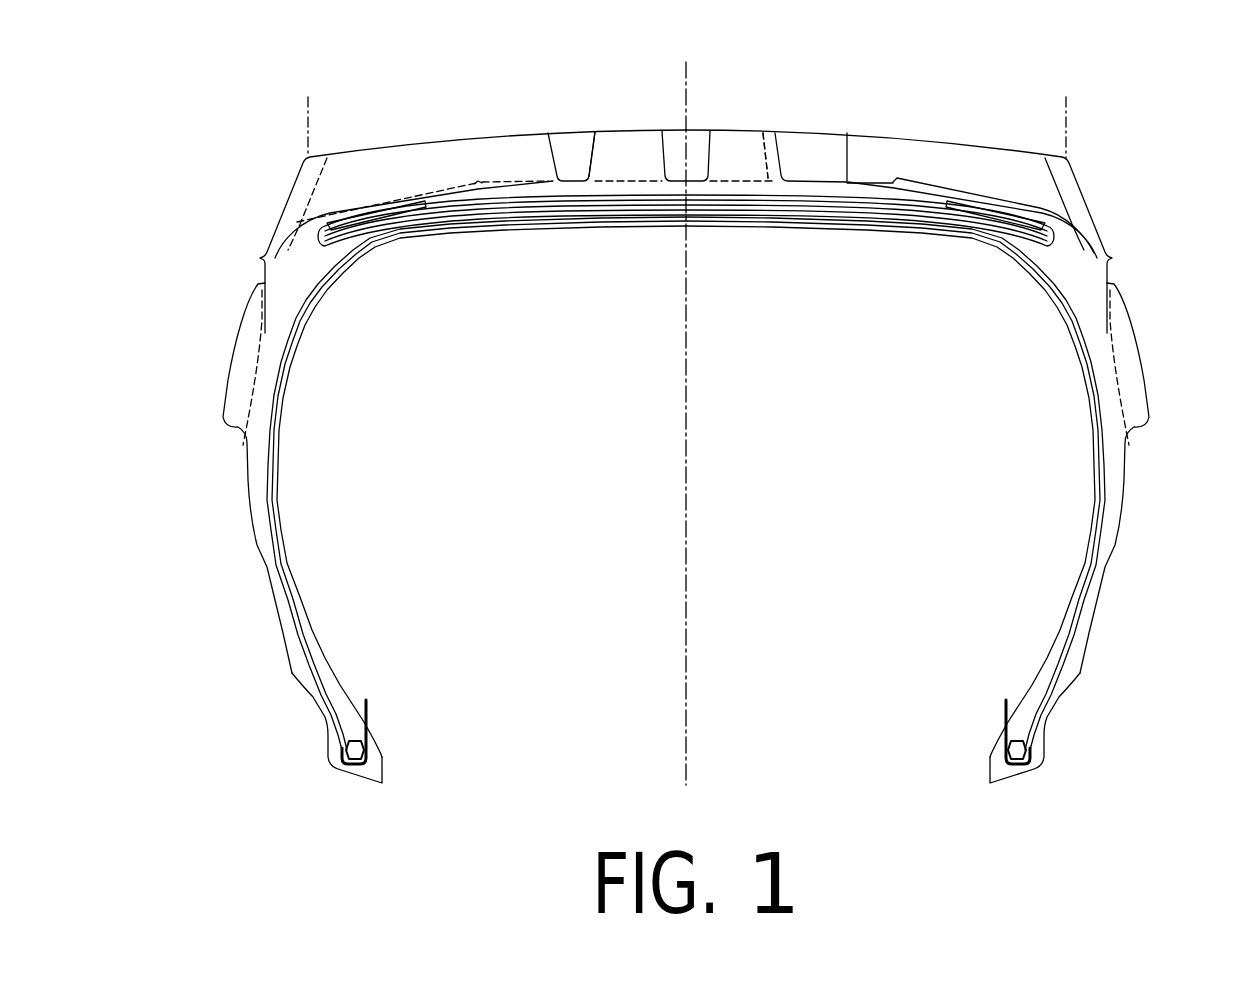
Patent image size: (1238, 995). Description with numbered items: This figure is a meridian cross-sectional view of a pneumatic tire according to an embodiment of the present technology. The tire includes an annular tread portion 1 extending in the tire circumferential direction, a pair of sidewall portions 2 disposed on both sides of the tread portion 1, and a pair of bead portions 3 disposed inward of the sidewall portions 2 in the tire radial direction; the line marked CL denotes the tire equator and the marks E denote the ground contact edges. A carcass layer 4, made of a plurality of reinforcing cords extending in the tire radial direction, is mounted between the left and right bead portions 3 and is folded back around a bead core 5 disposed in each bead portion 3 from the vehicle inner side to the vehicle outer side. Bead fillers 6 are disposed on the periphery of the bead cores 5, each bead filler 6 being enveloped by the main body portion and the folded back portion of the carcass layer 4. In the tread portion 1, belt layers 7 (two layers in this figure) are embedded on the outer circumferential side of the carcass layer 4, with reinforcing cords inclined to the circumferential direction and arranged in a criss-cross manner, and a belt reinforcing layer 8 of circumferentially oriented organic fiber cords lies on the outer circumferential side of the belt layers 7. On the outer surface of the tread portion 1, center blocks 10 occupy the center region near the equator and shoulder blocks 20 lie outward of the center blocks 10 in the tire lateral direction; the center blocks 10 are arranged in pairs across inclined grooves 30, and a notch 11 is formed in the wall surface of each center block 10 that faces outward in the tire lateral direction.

The tread portion 1 is at (787, 100).
The sidewall portion 2 is at (232, 466).
The bead portion 3 is at (312, 753).
The carcass layer 4 is at (1045, 262).
The bead core 5 is at (358, 750).
The bead filler 6 is at (338, 672).
The belt layer 7 is at (815, 205).
The belt reinforcing layer 8 is at (957, 205).
The center block 10 is at (640, 131).
The notch 11 is at (582, 168).
The shoulder block 20 is at (430, 148).
The inclined groove 30 is at (699, 136).